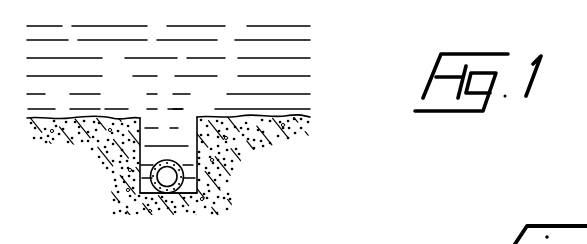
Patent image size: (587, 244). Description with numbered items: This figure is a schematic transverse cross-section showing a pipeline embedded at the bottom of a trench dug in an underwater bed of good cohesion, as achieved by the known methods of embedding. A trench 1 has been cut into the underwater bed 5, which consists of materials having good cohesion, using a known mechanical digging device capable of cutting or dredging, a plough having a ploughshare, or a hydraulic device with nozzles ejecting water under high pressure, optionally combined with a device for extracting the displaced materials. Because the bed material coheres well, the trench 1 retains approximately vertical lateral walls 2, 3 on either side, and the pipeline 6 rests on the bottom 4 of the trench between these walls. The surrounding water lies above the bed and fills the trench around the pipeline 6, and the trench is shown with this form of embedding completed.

The trench 1 is at (166, 128).
The lateral wall 2 is at (144, 121).
The lateral wall 3 is at (188, 128).
The bottom of the trench 4 is at (190, 178).
The underwater bed 5 is at (69, 136).
The pipeline 6 is at (151, 177).